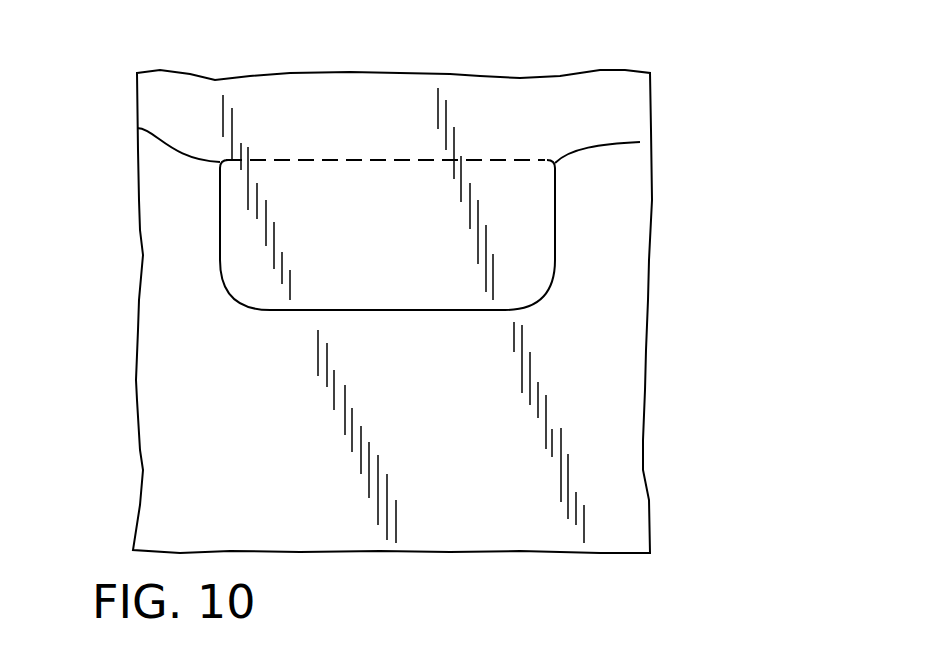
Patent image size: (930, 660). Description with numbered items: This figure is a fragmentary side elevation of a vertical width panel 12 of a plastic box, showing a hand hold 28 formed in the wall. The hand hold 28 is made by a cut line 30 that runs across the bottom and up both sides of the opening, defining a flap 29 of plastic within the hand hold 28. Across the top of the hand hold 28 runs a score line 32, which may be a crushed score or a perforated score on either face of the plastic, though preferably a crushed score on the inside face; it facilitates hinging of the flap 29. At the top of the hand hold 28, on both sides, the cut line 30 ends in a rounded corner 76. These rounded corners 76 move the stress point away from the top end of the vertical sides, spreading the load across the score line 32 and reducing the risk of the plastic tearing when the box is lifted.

The vertical width panel 12 is at (603, 422).
The hand hold 28 is at (210, 233).
The flap 29 is at (432, 283).
The cut line 30 is at (320, 312).
The score line 32 is at (317, 158).
The rounded corner 76 is at (137, 128).